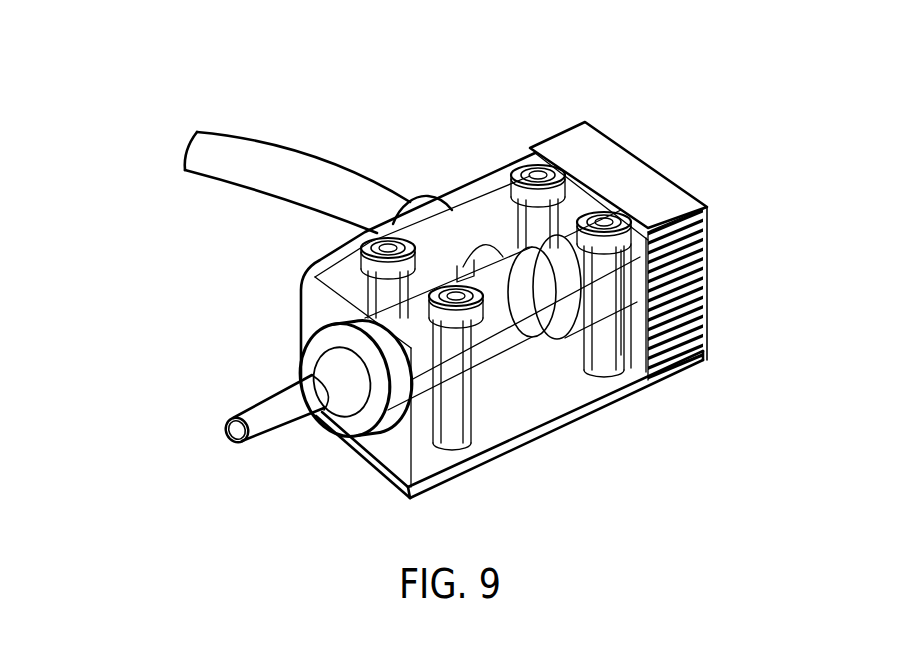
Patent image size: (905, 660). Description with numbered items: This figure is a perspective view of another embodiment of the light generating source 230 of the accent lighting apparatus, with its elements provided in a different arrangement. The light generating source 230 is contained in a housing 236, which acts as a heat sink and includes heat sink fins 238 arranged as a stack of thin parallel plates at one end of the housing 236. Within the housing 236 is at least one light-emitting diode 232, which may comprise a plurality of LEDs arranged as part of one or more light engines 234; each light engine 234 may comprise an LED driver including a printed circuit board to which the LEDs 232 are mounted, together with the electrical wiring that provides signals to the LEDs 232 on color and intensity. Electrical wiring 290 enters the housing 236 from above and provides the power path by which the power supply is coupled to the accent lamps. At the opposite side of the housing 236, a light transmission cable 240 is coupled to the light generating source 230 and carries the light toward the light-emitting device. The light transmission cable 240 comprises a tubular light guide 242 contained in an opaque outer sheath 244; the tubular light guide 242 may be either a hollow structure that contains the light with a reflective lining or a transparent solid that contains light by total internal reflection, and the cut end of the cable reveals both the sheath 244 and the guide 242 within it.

The light generating source 230 is at (176, 91).
The electrical wiring 290 is at (283, 173).
The heat sink fins 238 is at (643, 172).
The light-emitting diode 232 is at (592, 251).
The light engine 234 is at (637, 290).
The housing 236 is at (662, 371).
The light transmission cable 240 is at (265, 436).
The tubular light guide 242 is at (231, 419).
The opaque outer sheath 244 is at (238, 443).